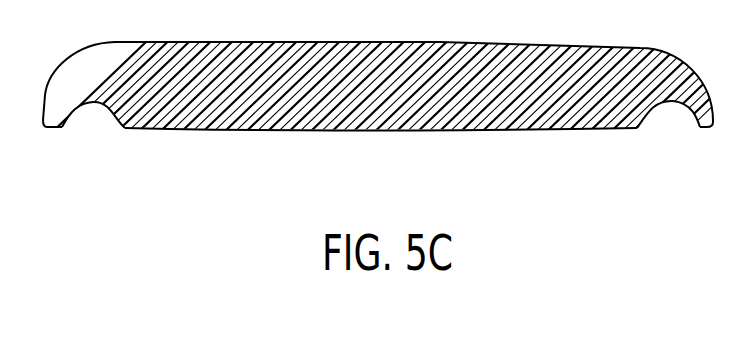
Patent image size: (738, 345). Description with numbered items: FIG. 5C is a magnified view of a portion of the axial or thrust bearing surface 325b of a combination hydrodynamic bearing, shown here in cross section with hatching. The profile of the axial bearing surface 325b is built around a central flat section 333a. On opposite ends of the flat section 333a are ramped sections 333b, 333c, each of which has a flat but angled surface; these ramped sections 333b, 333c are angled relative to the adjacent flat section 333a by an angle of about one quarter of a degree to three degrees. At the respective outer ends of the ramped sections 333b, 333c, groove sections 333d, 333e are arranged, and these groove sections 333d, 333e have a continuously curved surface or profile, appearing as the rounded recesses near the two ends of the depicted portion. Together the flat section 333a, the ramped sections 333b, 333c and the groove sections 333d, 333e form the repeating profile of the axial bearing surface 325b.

The flat section 333a is at (382, 130).
The ramped section 333b is at (230, 130).
The ramped section 333c is at (522, 129).
The groove section 333d is at (91, 103).
The groove section 333e is at (647, 113).
The axial bearing surface 325b is at (198, 130).